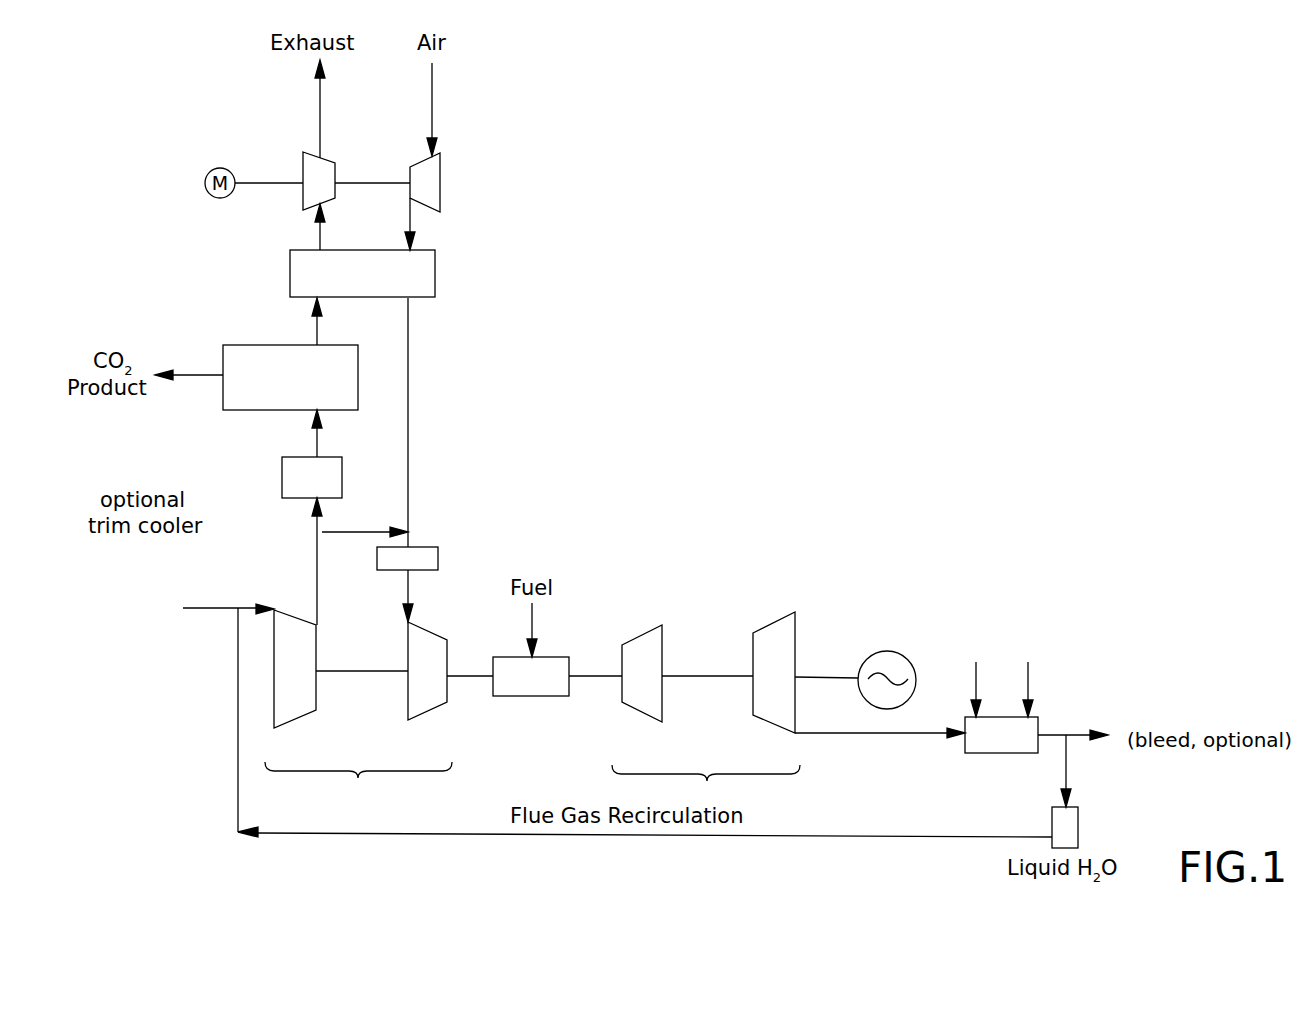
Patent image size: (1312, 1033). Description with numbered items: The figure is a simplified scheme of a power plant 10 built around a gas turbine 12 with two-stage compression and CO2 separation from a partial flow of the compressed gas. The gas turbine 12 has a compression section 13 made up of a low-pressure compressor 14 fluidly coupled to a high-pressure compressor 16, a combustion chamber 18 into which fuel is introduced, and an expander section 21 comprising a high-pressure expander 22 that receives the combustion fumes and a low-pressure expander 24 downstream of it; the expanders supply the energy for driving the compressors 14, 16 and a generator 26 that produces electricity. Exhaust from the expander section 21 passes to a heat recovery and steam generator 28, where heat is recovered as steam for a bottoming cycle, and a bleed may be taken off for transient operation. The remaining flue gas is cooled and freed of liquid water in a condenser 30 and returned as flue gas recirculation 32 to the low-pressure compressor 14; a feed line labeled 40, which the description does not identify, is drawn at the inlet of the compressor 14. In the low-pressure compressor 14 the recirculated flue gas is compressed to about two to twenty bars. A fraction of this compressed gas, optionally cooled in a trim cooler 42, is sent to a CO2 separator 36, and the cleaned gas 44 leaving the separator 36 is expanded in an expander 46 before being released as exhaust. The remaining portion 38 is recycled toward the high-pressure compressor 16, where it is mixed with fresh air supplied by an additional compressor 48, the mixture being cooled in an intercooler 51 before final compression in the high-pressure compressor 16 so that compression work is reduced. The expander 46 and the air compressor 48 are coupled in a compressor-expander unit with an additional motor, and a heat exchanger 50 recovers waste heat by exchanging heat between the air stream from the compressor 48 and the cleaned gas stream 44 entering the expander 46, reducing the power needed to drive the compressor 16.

The power plant 10 is at (820, 332).
The gas turbine 12 is at (588, 493).
The compression section 13 is at (358, 783).
The low-pressure compressor 14 is at (318, 693).
The high-pressure compressor 16 is at (428, 712).
The combustion chamber 18 is at (548, 657).
The expander section 21 is at (706, 787).
The high-pressure expander 22 is at (643, 631).
The low-pressure expander 24 is at (775, 616).
The generator 26 is at (890, 652).
The heat recovery and steam generator 28 is at (1003, 717).
The condenser 30 is at (1068, 762).
The flue gas recirculation 32 is at (890, 837).
The CO2 separator 36 is at (253, 345).
The remaining portion of flue gas 38 is at (358, 534).
The inlet stream 40 is at (228, 610).
The trim cooler 42 is at (282, 478).
The cleaned gas 44 is at (318, 331).
The expander 46 is at (318, 157).
The additional compressor 48 is at (441, 178).
The heat exchanger 50 is at (437, 275).
The intercooler 51 is at (438, 560).